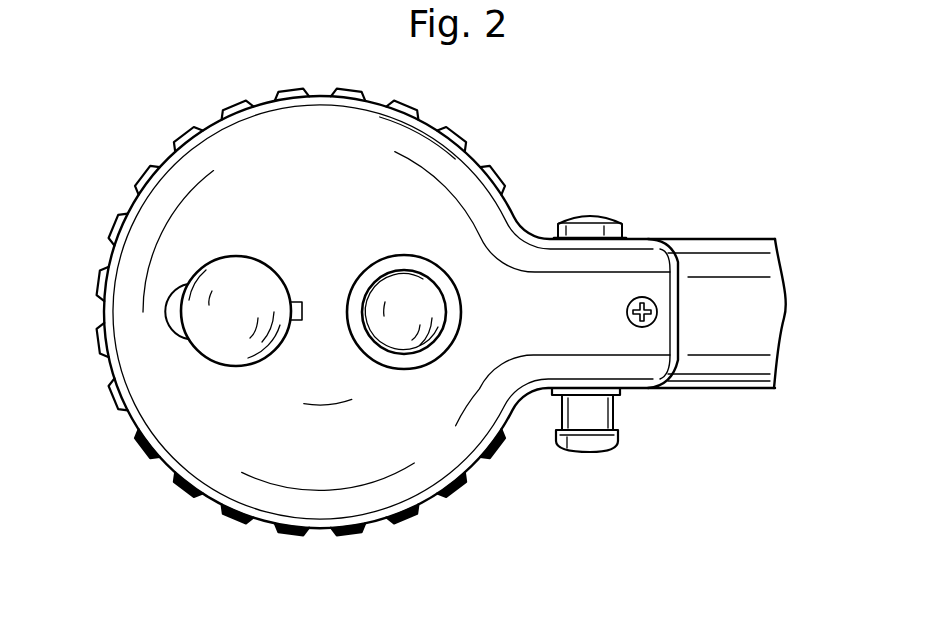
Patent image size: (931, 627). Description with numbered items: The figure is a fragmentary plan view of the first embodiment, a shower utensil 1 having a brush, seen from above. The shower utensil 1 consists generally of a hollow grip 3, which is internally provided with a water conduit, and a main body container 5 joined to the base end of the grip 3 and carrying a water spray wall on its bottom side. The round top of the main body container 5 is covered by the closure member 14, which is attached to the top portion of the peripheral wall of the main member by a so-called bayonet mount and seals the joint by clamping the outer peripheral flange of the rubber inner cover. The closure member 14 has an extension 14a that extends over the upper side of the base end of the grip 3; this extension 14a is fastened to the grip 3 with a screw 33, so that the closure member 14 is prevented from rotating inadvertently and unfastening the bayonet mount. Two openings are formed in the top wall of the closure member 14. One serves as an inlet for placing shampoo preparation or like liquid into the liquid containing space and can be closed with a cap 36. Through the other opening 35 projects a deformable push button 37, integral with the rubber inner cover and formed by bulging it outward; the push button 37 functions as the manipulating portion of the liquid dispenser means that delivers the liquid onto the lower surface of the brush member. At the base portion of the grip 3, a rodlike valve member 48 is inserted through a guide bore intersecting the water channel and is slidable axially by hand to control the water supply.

The shower utensil 1 is at (522, 192).
The hollow grip 3 is at (722, 240).
The main body container 5 is at (166, 154).
The closure member 14 is at (140, 220).
The extension 14a is at (630, 268).
The screw 33 is at (653, 320).
The opening 35 is at (397, 282).
The cap 36 is at (247, 273).
The push button 37 is at (430, 303).
The valve member 48 is at (593, 213).